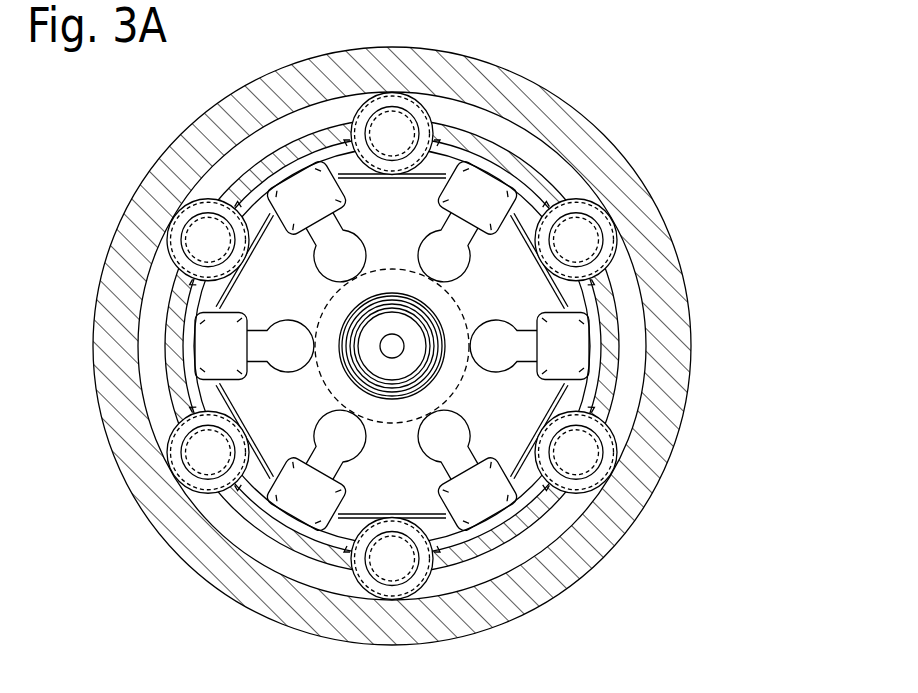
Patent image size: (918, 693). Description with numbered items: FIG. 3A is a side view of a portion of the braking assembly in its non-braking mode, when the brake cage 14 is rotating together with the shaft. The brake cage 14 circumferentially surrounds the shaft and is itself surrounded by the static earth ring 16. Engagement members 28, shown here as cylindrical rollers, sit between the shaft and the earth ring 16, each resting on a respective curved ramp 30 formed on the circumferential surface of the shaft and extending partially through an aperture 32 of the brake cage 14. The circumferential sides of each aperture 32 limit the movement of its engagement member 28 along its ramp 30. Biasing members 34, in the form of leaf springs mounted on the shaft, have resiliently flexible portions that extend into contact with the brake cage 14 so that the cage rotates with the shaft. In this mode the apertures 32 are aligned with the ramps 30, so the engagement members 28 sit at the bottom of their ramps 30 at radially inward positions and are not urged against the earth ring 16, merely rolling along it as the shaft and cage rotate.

The brake cage 14 is at (610, 368).
The earth ring 16 is at (575, 140).
The engagement members 28 is at (402, 127).
The ramps 30 is at (557, 288).
The apertures 32 is at (238, 208).
The biasing members 34 is at (453, 533).